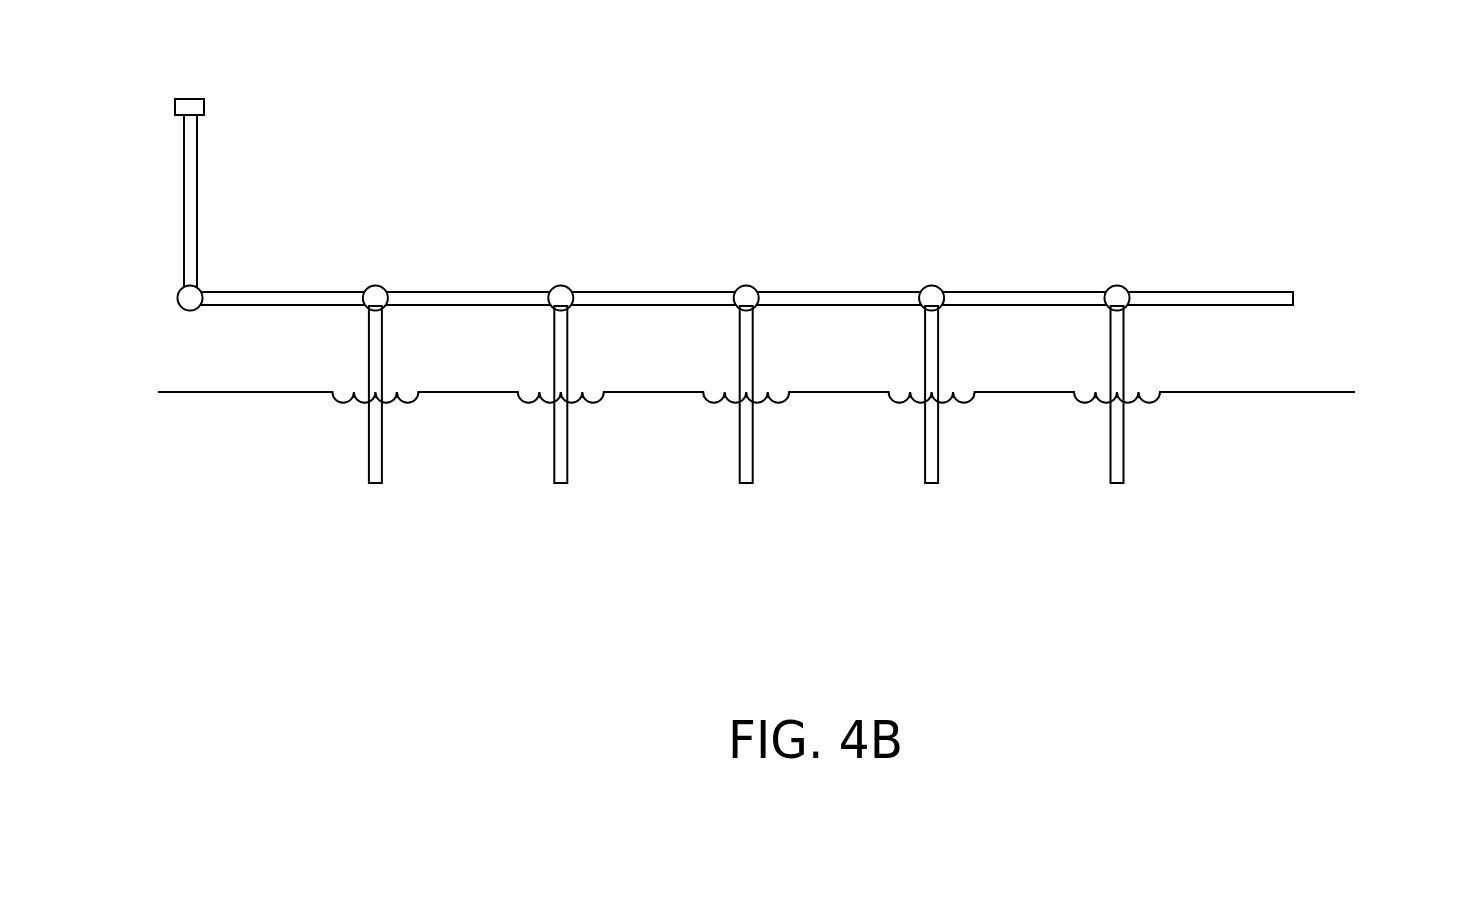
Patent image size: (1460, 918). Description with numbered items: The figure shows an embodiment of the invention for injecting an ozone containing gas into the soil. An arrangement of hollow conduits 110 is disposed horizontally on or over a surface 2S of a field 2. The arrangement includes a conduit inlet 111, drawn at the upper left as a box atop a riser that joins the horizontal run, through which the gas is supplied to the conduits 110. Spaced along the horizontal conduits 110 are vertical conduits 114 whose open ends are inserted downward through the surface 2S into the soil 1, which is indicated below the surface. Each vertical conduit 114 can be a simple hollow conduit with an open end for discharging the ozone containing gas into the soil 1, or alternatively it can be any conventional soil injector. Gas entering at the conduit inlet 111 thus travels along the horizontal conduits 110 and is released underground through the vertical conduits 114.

The soil 1 is at (839, 570).
The field 2 is at (1289, 372).
The surface 2S is at (1318, 388).
The hollow conduits 110 is at (346, 291).
The conduit inlet 111 is at (175, 109).
The vertical conduits 114 is at (382, 380).